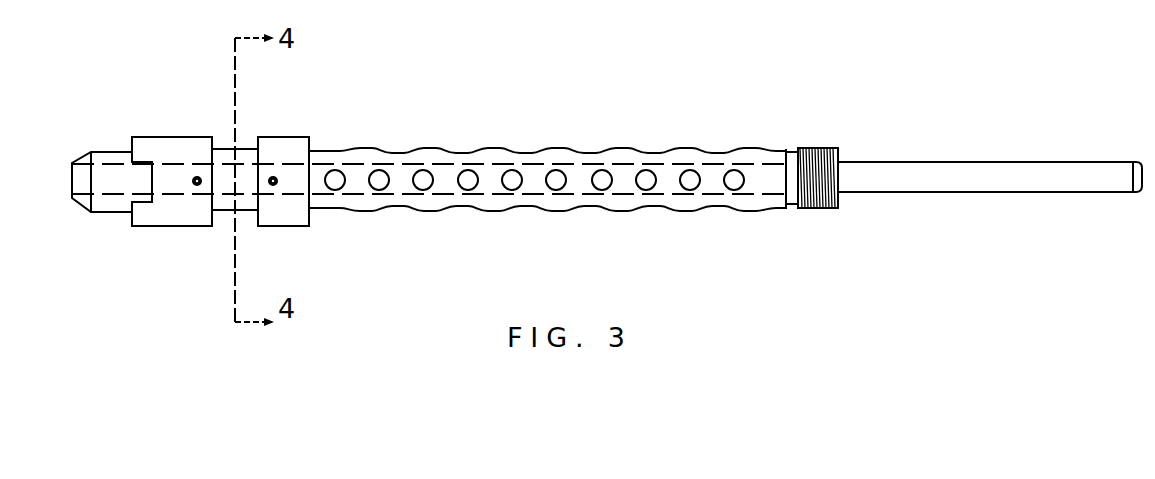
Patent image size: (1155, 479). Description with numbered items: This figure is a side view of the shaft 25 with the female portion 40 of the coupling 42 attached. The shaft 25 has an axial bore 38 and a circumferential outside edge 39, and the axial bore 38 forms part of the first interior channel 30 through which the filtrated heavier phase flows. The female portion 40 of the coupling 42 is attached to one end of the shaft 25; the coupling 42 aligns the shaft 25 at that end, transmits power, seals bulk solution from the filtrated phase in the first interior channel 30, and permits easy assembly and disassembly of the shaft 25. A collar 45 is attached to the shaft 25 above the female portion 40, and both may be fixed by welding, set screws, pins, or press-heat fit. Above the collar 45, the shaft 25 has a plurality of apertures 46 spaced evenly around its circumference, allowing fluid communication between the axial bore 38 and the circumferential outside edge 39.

The shaft 25 is at (223, 148).
The first interior channel 30 is at (663, 163).
The axial bore 38 is at (243, 196).
The circumferential outside edge 39 is at (230, 210).
The female portion 40 is at (150, 178).
The coupling 42 is at (175, 136).
The collar 45 is at (273, 137).
The apertures 46 is at (646, 190).